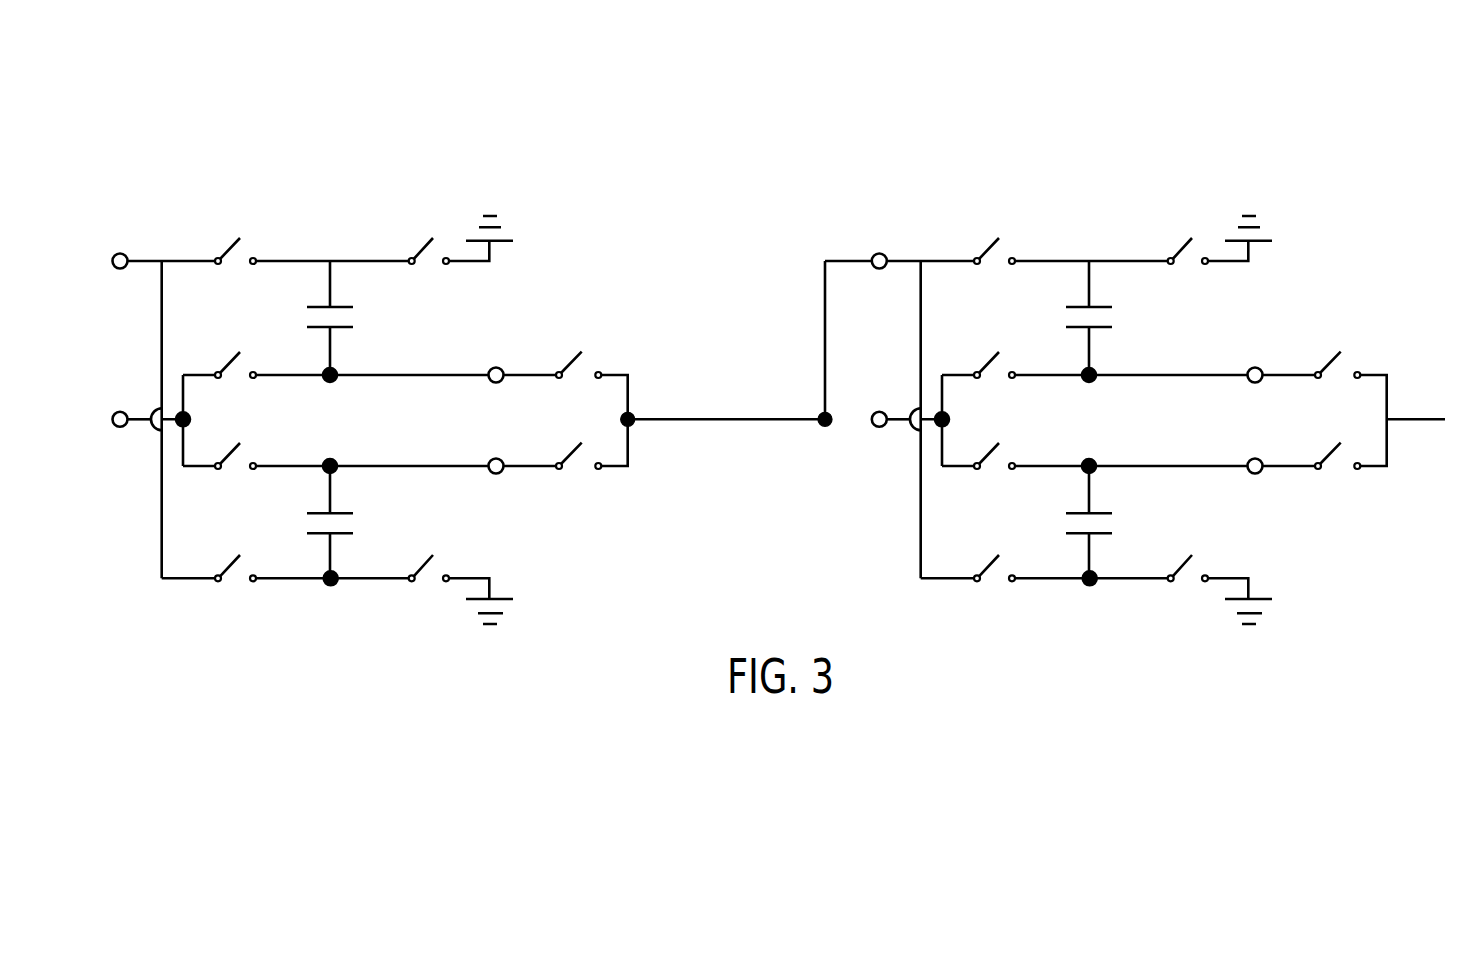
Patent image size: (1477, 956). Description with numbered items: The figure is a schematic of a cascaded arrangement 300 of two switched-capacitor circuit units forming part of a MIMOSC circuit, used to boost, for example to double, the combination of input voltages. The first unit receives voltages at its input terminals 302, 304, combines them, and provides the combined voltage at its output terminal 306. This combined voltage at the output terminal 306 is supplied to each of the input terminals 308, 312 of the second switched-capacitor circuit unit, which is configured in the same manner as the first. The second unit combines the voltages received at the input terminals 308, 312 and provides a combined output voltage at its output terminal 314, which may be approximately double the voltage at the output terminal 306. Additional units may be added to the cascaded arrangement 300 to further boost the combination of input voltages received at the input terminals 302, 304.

The cascaded arrangement 300 is at (768, 338).
The input terminal 302 is at (118, 254).
The input terminal 304 is at (118, 413).
The output terminal 306 is at (693, 417).
The input terminal 308 is at (877, 255).
The input terminal 312 is at (876, 413).
The output terminal 314 is at (1428, 418).